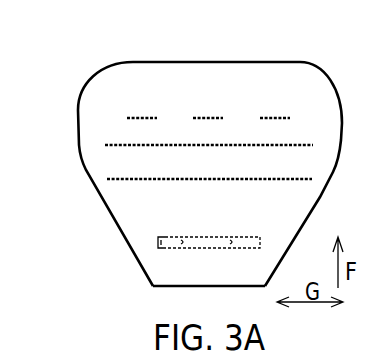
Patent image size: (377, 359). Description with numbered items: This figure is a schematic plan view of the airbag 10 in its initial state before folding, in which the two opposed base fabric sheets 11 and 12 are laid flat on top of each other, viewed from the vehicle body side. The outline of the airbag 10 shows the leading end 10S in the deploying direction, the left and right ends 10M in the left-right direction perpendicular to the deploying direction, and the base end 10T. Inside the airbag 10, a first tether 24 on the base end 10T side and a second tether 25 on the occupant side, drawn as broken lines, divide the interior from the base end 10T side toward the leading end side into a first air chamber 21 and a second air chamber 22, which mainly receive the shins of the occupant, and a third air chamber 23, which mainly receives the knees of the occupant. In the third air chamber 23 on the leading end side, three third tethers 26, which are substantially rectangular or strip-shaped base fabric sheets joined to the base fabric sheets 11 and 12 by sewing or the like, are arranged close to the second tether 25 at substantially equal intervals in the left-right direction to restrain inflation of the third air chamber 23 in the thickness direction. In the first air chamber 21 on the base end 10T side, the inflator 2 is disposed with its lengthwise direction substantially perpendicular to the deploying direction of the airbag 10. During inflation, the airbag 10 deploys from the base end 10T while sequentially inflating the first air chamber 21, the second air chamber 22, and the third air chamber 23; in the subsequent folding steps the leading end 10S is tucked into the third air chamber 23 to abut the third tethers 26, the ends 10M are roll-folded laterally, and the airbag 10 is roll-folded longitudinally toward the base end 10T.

The airbag 10 is at (196, 148).
The leading end 10S is at (172, 62).
The ends in the left-right direction 10M is at (78, 117).
The base end 10T is at (137, 242).
The third air chamber 23 is at (118, 92).
The third tethers 26 is at (208, 117).
The second tether 25 is at (128, 144).
The second air chamber 22 is at (118, 160).
The first tether 24 is at (103, 179).
The first air chamber 21 is at (145, 217).
The inflator 2 is at (174, 249).
The base fabric sheet 12 is at (238, 72).
The base fabric sheet 11 is at (296, 63).